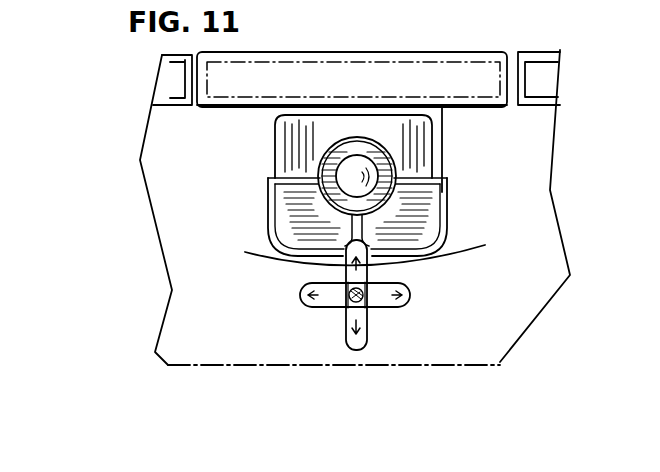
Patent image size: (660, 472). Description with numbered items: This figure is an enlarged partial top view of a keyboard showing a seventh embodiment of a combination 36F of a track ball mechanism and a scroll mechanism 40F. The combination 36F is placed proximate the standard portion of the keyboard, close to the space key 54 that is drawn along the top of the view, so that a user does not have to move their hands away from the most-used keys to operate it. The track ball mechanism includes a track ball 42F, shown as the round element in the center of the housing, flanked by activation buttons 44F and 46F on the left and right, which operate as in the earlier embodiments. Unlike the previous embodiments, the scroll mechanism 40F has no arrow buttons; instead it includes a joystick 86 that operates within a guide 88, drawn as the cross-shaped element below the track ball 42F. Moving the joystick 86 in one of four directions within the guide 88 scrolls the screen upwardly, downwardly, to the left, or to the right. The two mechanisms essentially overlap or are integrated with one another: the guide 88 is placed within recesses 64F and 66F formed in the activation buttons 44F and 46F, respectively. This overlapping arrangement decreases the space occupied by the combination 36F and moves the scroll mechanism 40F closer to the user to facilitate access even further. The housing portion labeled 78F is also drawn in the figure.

The space key 54 is at (460, 64).
The controller housing 78F is at (518, 158).
The track ball 42F is at (368, 164).
The activation button 44F is at (270, 200).
The activation button 46F is at (423, 202).
The recess 64F is at (300, 265).
The recess 66F is at (424, 259).
The joystick 86 is at (348, 302).
The guide 88 is at (412, 297).
The combination 36F is at (248, 312).
The scroll mechanism 40F is at (466, 304).